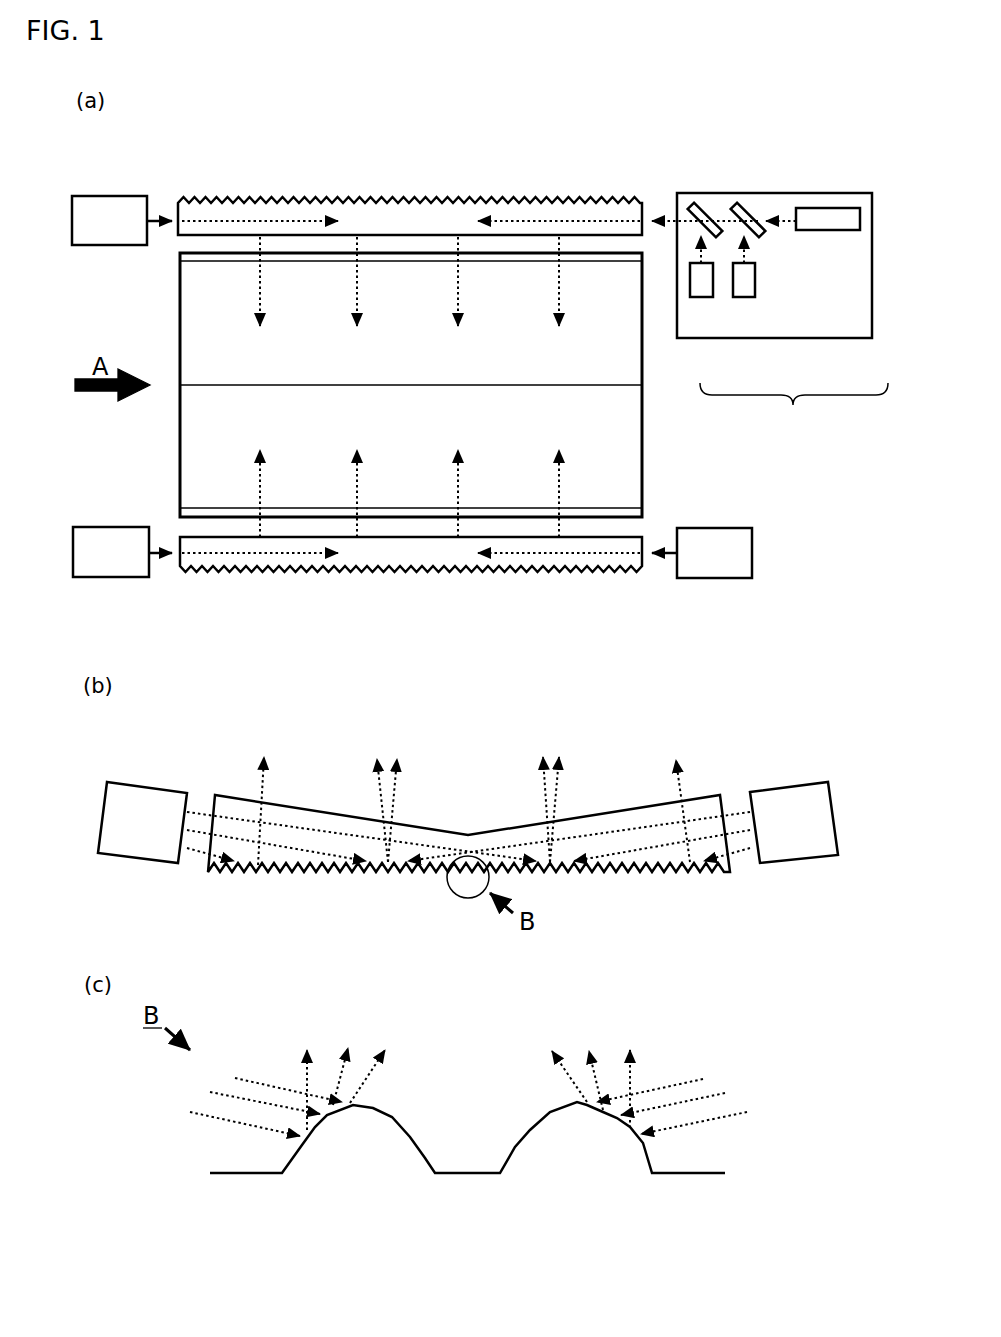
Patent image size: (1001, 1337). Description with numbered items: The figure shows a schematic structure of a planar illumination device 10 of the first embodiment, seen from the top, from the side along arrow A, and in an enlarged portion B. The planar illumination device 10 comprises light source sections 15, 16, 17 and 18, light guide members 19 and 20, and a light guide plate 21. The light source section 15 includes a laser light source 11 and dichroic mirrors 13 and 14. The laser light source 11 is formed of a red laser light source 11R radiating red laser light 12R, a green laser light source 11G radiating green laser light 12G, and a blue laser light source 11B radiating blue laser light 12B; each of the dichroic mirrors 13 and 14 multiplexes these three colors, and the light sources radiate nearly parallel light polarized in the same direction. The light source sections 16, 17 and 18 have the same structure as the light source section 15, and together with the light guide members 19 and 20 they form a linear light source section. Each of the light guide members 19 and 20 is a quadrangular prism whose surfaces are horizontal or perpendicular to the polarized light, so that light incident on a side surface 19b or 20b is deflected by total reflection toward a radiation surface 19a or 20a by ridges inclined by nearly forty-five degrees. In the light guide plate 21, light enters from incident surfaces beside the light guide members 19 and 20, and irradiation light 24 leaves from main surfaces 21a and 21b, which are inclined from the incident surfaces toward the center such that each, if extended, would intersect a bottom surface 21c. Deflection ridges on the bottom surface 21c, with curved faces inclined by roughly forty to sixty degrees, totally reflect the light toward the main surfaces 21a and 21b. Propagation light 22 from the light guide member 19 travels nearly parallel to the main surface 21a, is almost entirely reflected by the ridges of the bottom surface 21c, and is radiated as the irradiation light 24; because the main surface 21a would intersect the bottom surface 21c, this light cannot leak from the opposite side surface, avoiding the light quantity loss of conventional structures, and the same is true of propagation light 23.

The planar illumination device 10 is at (208, 143).
The laser light source 11 is at (794, 407).
The red laser light source 11R is at (705, 297).
The blue laser light source 11B is at (750, 297).
The green laser light source 11G is at (848, 230).
The red laser light 12R is at (702, 242).
The blue laser light 12B is at (744, 246).
The green laser light 12G is at (752, 213).
The dichroic mirror 13 is at (740, 205).
The dichroic mirror 14 is at (697, 205).
The light source section 15 is at (808, 193).
The light source section 16 is at (90, 220).
The light source section 17 is at (705, 543).
The light source section 18 is at (105, 543).
The light guide member 19 is at (397, 218).
The radiation surface 19a is at (200, 238).
The side surface 19b is at (425, 197).
The light guide member 20 is at (382, 558).
The radiation surface 20a is at (200, 533).
The side surface 20b is at (408, 570).
The light guide plate 21 is at (198, 352).
The main surface 21a is at (328, 810).
The main surface 21b is at (618, 812).
The bottom surface 21c is at (632, 870).
The propagation light 22 is at (458, 297).
The propagation light 23 is at (460, 480).
The irradiation light 24 is at (545, 775).